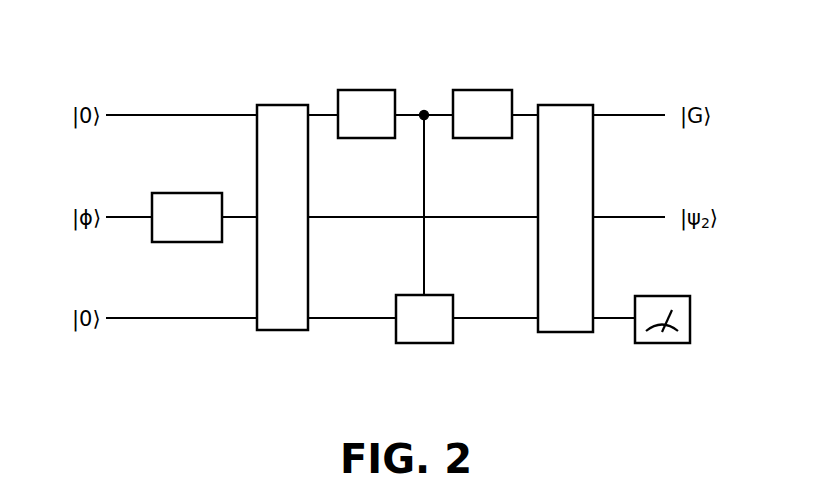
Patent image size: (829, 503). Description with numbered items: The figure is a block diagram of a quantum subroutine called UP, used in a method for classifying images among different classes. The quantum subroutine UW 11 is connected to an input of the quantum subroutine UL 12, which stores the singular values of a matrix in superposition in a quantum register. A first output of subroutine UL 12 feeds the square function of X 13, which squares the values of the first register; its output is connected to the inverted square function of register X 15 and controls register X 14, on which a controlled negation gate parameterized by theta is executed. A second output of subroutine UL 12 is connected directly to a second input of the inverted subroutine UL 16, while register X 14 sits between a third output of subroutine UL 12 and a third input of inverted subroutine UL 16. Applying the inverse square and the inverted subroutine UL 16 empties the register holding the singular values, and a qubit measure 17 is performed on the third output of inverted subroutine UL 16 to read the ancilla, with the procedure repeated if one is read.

The quantum subroutine UW 11 is at (172, 192).
The quantum subroutine UL 12 is at (270, 104).
The square function of X 13 is at (356, 89).
The register X 14 is at (414, 344).
The inverted square function of register X 15 is at (493, 89).
The inverted subroutine UL 16 is at (581, 104).
The measurement 17 is at (666, 344).